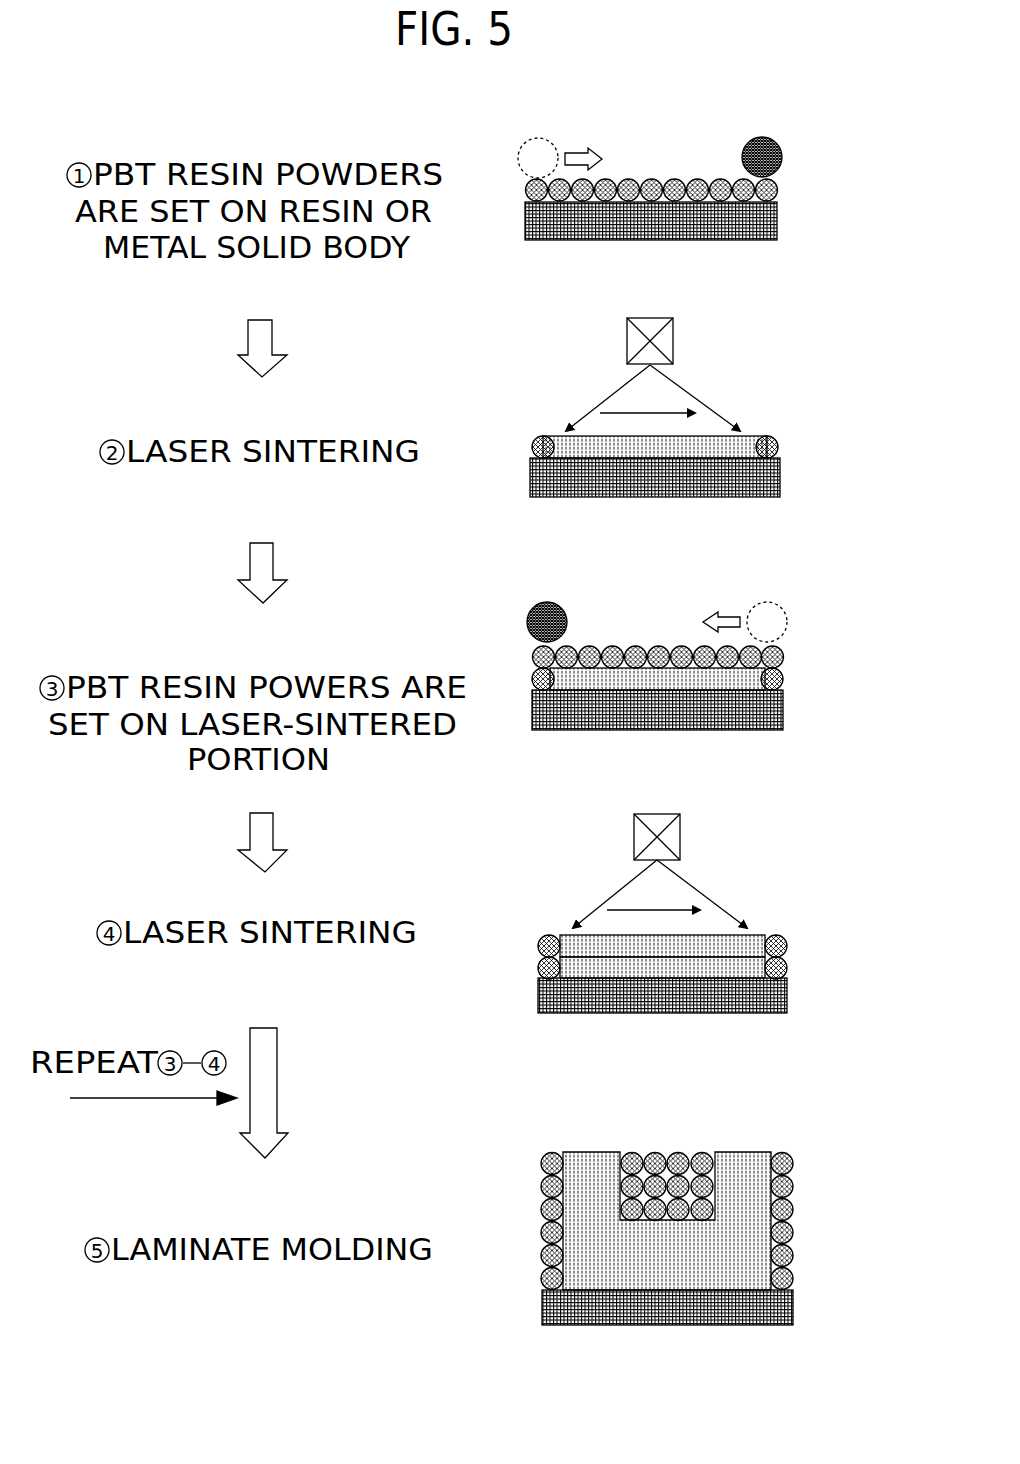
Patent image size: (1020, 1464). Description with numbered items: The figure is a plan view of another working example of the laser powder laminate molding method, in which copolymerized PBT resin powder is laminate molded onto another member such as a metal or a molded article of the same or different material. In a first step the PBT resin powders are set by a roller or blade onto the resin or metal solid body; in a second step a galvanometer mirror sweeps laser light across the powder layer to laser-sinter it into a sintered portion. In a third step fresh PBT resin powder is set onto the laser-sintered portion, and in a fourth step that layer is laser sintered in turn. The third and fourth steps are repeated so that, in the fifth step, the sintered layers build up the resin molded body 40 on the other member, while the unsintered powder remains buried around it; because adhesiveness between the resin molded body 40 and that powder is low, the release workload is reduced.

The resin molded body 40 is at (742, 1168).